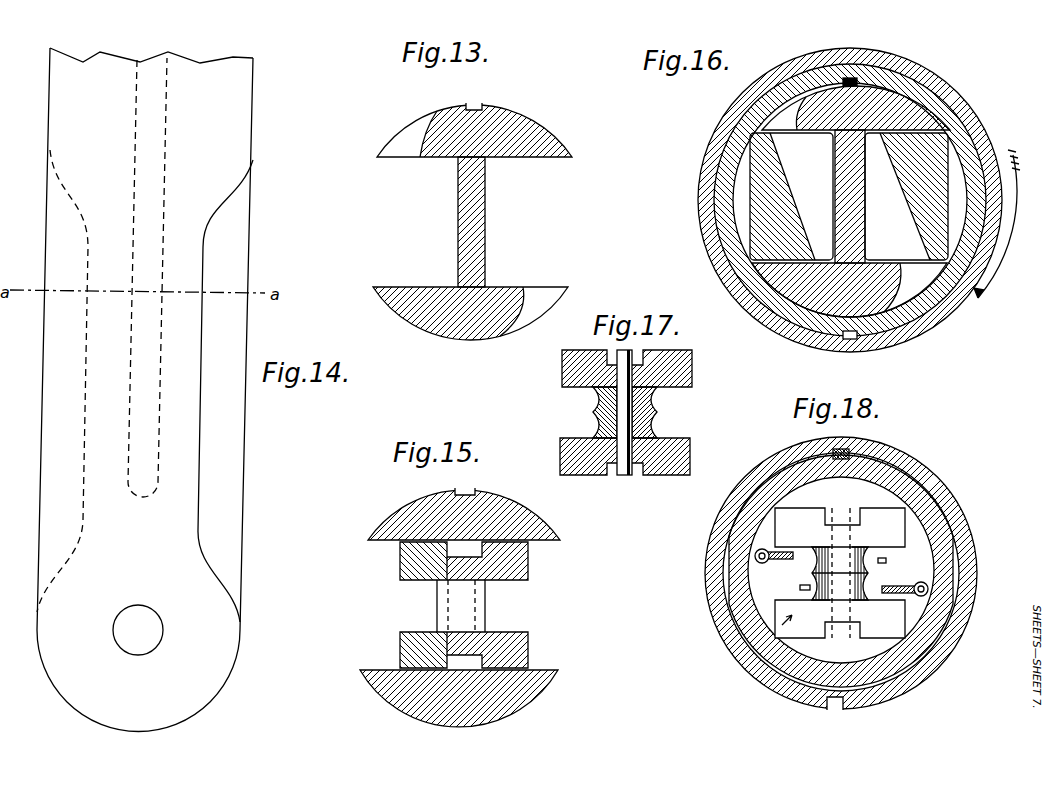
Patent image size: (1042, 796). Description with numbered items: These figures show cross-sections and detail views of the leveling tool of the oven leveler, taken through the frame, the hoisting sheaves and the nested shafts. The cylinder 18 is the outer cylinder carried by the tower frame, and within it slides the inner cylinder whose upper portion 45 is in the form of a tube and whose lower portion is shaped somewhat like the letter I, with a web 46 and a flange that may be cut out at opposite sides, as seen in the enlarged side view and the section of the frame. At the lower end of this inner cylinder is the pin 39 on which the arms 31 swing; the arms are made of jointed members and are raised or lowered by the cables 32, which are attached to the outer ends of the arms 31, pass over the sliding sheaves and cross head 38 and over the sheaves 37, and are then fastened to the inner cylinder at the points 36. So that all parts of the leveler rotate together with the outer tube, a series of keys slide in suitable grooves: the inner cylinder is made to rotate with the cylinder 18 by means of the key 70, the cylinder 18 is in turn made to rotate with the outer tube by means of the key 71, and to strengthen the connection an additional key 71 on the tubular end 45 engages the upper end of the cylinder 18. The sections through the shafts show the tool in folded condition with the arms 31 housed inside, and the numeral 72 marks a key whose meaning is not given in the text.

In FIG. 16, the cylinder 18 is at (935, 322).
In FIG. 18, the cylinder 18 is at (957, 527).
In FIG. 16, the arms 31 is at (762, 158).
In FIG. 18, the cables 32 is at (893, 572).
In FIG. 18, the points 36 is at (765, 572).
In FIG. 14, the sheaves 37 is at (147, 532).
In FIG. 13, the sheaves 37 is at (500, 122).
In FIG. 15, the sheaves 37 is at (408, 503).
In FIG. 17, the sheaves 37 is at (658, 399).
In FIG. 16, the sheaves 37 is at (895, 80).
In FIG. 18, the sheaves 37 is at (876, 540).
In FIG. 15, the cross head 38 is at (527, 580).
In FIG. 17, the cross head 38 is at (692, 372).
In FIG. 18, the cross head 38 is at (733, 652).
In FIG. 14, the pin 39 is at (163, 633).
In FIG. 18, the upper portion 45 is at (890, 487).
In FIG. 14, the web 46 is at (152, 58).
In FIG. 13, the web 46 is at (487, 227).
In FIG. 16, the web 46 is at (847, 192).
In FIG. 16, the key 70 is at (857, 72).
In FIG. 16, the key 71 is at (855, 340).
In FIG. 18, the key 71 is at (838, 707).
In FIG. 16, the key 72 is at (920, 308).
In FIG. 18, the key 72 is at (860, 448).